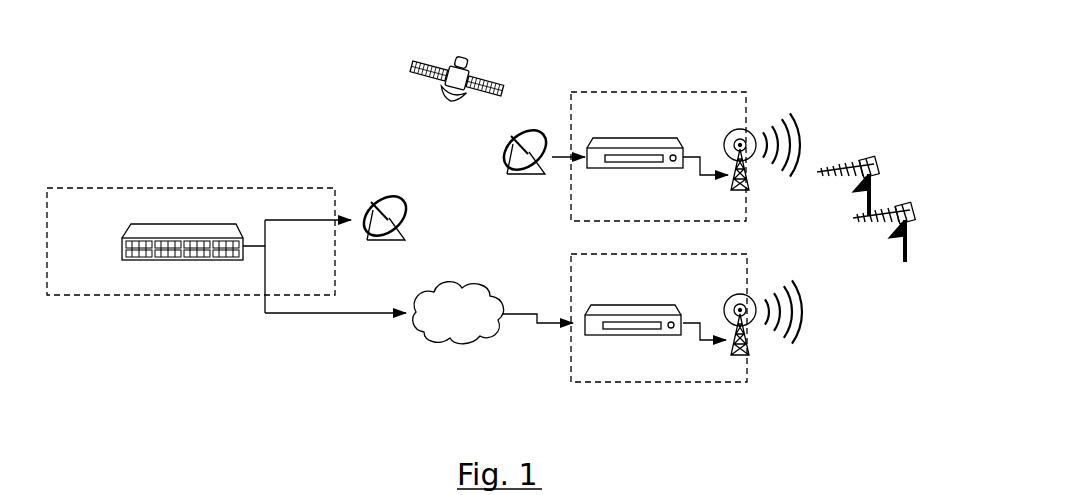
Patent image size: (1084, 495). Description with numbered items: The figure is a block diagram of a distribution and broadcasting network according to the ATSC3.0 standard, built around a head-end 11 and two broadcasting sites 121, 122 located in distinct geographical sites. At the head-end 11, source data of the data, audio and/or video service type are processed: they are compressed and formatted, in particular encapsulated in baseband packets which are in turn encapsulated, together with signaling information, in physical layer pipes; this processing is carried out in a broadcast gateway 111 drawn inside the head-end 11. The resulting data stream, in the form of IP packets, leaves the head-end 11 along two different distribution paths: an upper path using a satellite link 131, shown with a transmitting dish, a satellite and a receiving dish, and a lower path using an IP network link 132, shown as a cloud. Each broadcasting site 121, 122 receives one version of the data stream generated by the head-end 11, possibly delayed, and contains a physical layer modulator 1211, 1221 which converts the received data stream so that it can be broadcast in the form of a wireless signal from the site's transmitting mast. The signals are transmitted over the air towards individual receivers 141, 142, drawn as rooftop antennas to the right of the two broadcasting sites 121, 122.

The head-end 11 is at (208, 197).
The broadcast gateway 111 is at (185, 262).
The broadcasting site 121 is at (718, 108).
The physical layer modulator 1211 is at (648, 145).
The broadcasting site 122 is at (712, 368).
The physical layer modulator 1221 is at (633, 330).
The satellite link 131 is at (471, 68).
The IP network link 132 is at (467, 328).
The individual receiver 141 is at (872, 158).
The individual receiver 142 is at (915, 210).